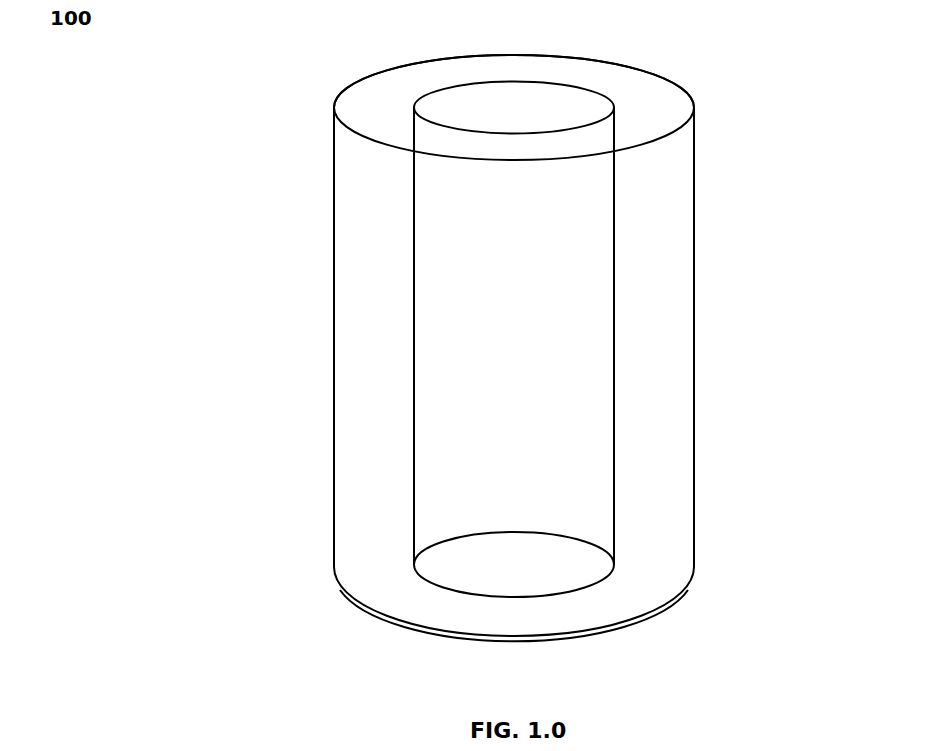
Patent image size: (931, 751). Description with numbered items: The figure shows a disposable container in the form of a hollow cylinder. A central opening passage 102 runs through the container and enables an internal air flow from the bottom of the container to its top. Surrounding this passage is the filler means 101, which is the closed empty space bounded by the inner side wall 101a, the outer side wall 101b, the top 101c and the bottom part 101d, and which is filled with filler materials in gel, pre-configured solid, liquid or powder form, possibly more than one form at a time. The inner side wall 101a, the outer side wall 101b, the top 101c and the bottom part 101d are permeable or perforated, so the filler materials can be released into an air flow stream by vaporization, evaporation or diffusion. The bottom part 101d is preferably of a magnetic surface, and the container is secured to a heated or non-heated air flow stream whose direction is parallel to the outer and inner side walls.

The filler means 101 is at (669, 229).
The inner side wall 101a is at (715, 338).
The outer side wall 101b is at (694, 415).
The top 101c is at (608, 75).
The bottom part 101d is at (646, 574).
The opening passage with a closed empty space therebetween 102 is at (508, 117).